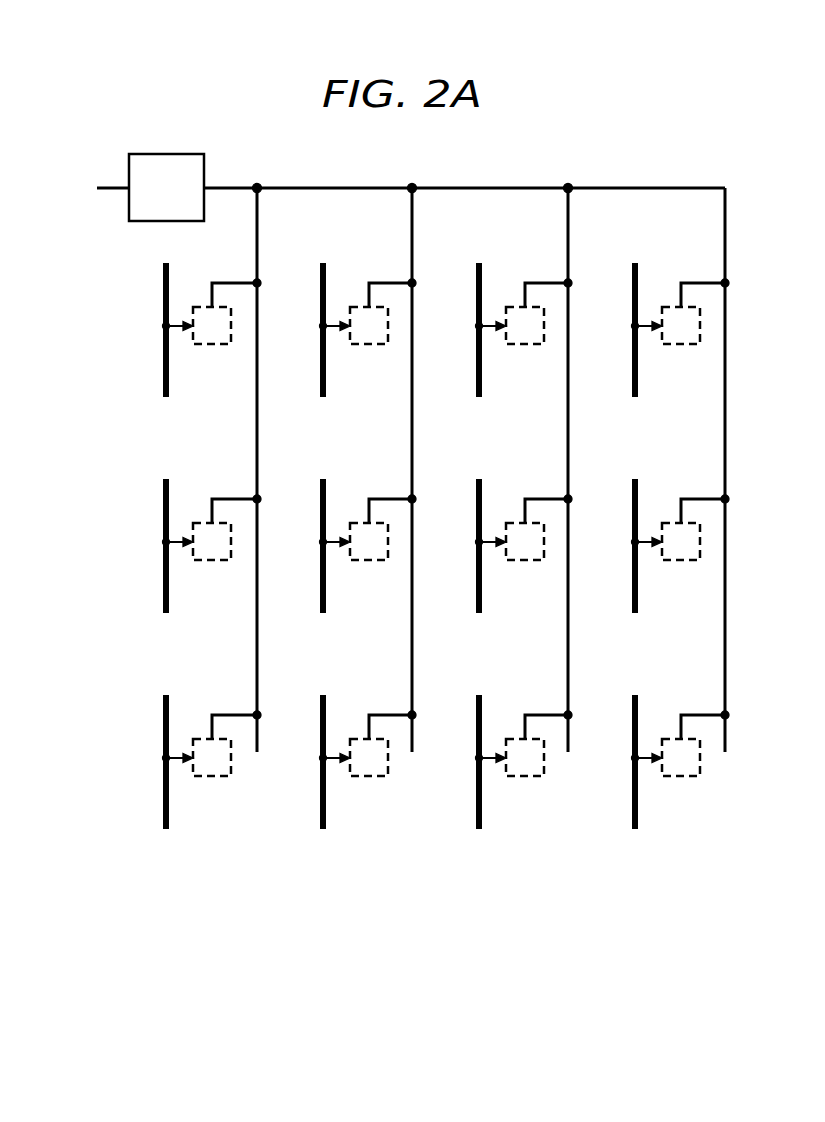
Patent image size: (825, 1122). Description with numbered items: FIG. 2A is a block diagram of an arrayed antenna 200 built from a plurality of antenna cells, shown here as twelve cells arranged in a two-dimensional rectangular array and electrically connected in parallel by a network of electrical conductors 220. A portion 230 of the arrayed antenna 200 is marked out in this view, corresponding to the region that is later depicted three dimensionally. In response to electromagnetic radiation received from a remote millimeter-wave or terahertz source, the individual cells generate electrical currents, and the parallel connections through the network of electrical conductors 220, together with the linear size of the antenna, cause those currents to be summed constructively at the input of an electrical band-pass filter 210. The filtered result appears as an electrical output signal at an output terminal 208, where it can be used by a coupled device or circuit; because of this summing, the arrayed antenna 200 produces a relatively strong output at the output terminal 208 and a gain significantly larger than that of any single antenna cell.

The arrayed antenna 200 is at (418, 150).
The output terminal 208 is at (112, 188).
The electrical band-pass filter 210 is at (155, 154).
The network of electrical conductors 220 is at (603, 187).
The portion of arrayed antenna 230 is at (680, 593).